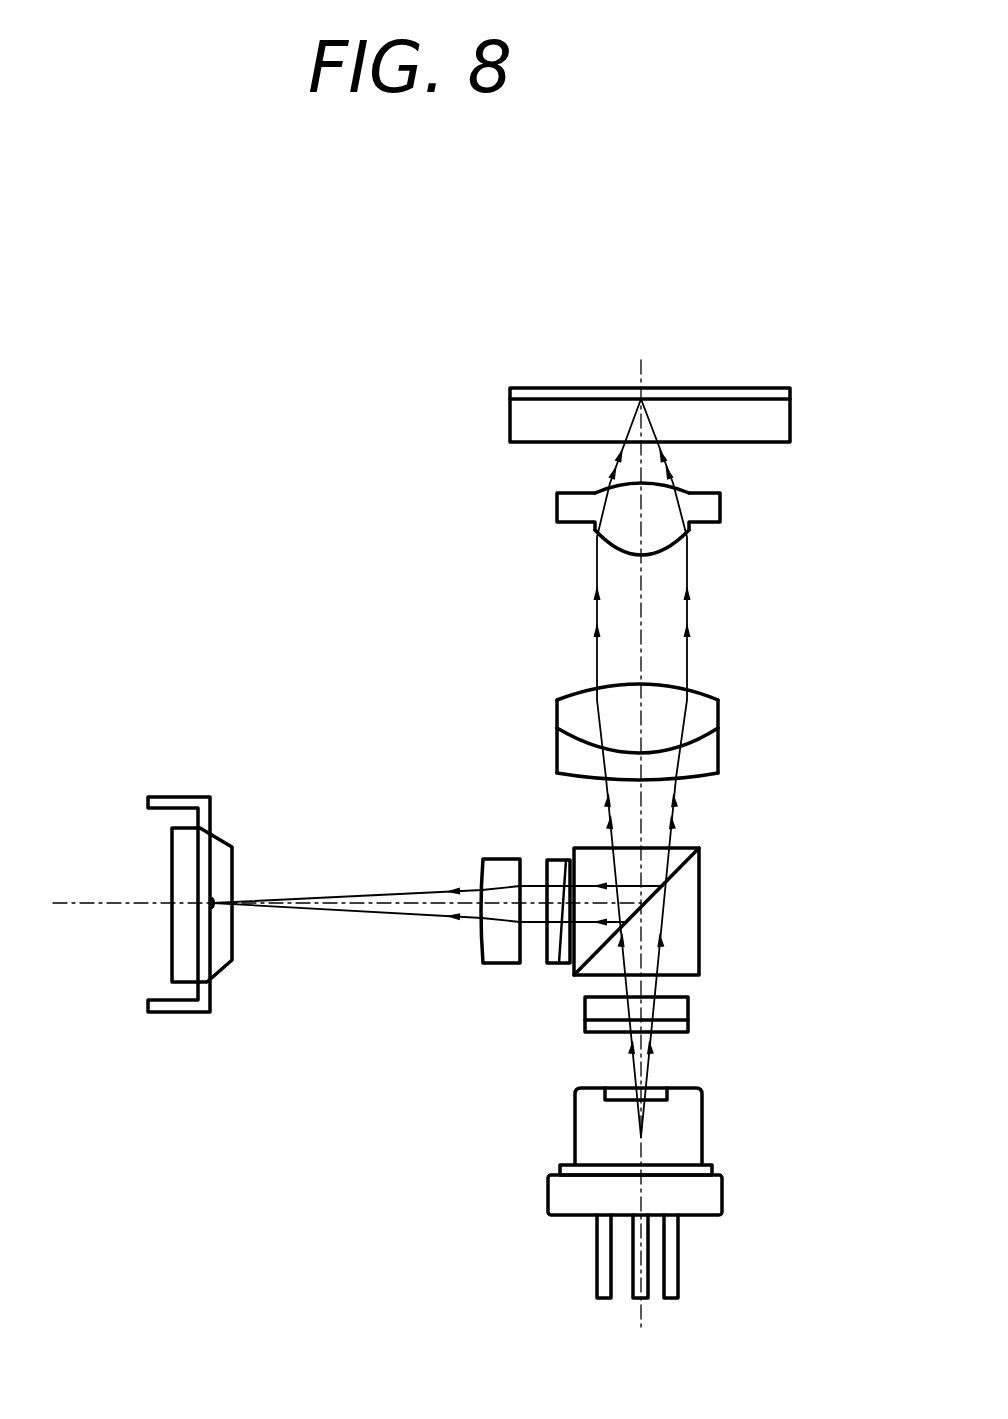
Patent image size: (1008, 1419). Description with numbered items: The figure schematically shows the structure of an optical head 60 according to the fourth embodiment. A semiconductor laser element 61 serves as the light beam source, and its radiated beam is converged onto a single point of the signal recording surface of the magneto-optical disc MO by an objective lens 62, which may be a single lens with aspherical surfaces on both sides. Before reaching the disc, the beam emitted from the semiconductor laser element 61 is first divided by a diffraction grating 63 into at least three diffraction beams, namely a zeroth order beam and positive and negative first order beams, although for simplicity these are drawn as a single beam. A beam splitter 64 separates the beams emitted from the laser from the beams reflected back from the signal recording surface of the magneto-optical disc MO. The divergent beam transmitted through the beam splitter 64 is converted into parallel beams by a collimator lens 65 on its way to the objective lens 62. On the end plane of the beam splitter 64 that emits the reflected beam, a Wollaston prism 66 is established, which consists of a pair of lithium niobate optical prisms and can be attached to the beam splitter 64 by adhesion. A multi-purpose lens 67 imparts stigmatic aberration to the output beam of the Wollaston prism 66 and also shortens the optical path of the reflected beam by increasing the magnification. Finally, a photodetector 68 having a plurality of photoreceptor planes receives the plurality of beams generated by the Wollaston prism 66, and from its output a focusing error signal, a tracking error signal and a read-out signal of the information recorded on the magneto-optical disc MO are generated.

The optical head 60 is at (328, 512).
The magneto-optical disc MO is at (710, 393).
The semiconductor laser element 61 is at (702, 1127).
The objective lens 62 is at (722, 503).
The diffraction grating 63 is at (690, 1003).
The beam splitter 64 is at (700, 918).
The collimator lens 65 is at (722, 717).
The Wollaston prism 66 is at (553, 965).
The multi-purpose lens 67 is at (483, 962).
The photodetector 68 is at (232, 960).